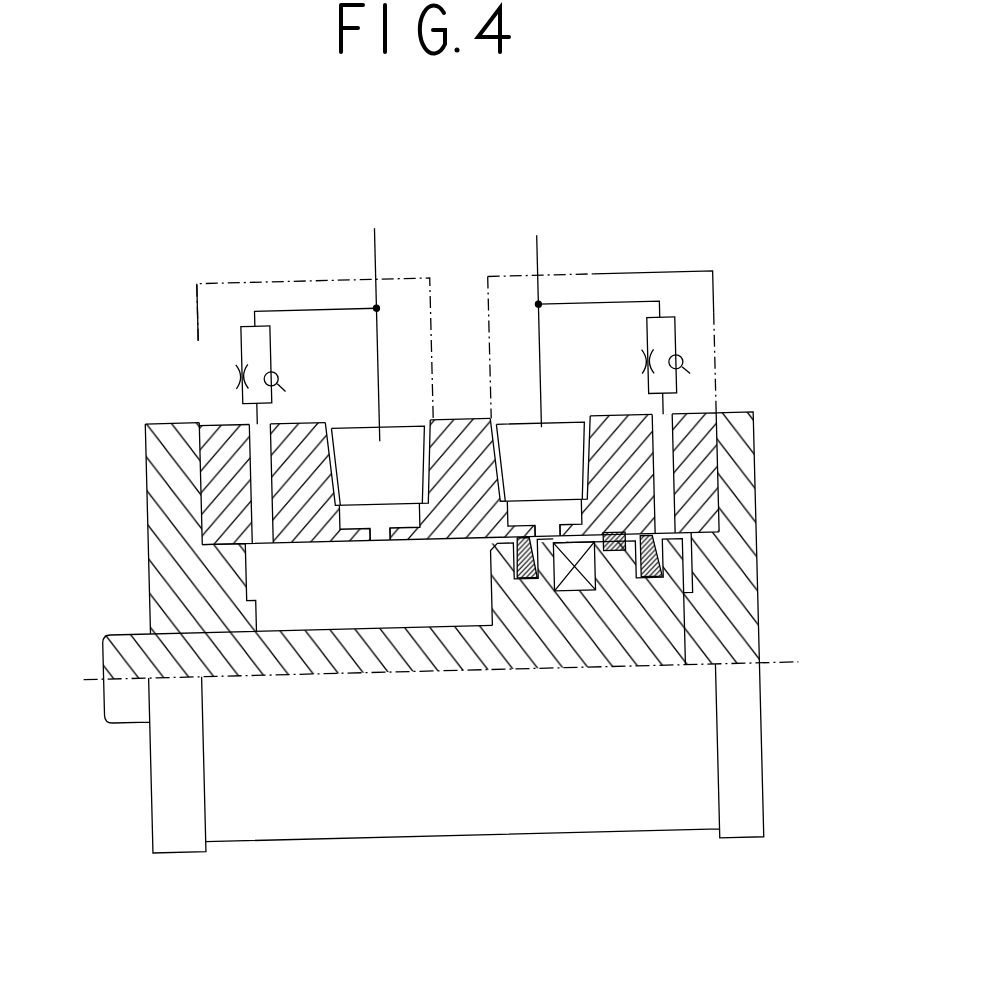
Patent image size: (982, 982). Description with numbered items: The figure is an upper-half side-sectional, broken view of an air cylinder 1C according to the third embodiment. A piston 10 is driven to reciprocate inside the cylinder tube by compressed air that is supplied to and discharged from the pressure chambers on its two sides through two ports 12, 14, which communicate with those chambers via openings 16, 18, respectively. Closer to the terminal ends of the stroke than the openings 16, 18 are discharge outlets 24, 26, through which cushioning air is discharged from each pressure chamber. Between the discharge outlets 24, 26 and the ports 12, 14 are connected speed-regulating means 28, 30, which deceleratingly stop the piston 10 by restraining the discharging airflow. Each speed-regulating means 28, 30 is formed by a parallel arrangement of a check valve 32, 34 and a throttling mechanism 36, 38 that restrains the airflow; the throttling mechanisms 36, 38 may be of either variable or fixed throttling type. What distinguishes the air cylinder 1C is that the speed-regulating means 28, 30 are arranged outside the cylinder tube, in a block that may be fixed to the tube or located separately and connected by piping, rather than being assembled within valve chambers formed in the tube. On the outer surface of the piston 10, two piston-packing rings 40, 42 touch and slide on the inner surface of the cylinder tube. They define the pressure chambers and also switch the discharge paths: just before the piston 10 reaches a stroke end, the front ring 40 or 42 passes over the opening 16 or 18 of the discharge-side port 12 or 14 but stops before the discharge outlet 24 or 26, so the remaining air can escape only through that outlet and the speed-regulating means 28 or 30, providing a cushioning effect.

The air cylinder 1C is at (743, 251).
The piston 10 is at (600, 646).
The port 12 is at (522, 442).
The port 14 is at (402, 444).
The opening 16 is at (548, 528).
The opening 18 is at (378, 537).
The discharge outlet 24 is at (664, 443).
The discharge outlet 26 is at (259, 476).
The speed-regulating means 28 is at (702, 334).
The speed-regulating means 30 is at (227, 325).
The check valve 32 is at (688, 374).
The check valve 34 is at (284, 368).
The throttling mechanism 36 is at (649, 372).
The throttling mechanism 38 is at (241, 372).
The piston-packing ring 40 is at (654, 561).
The piston-packing ring 42 is at (514, 567).